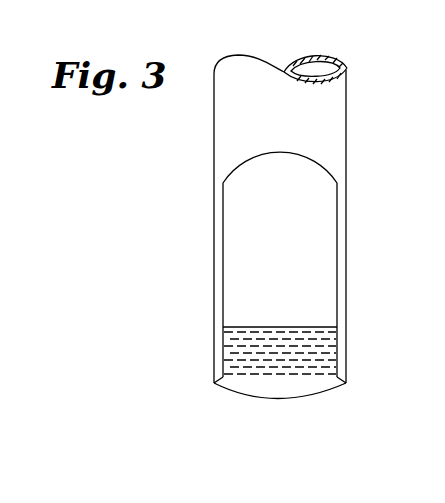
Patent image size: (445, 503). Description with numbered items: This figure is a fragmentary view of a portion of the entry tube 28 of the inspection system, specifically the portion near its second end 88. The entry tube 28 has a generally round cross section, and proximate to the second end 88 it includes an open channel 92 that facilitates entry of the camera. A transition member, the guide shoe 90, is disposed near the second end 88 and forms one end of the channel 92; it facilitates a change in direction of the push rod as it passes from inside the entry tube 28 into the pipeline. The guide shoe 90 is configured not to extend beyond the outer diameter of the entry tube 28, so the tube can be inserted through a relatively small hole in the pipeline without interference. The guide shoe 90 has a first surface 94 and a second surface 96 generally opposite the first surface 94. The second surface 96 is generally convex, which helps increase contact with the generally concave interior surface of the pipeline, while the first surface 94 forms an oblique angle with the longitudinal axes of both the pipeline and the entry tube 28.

The entry tube 28 is at (346, 130).
The second end 88 is at (346, 383).
The guide shoe 90 is at (235, 397).
The open channel 92 is at (337, 246).
The first surface 94 is at (242, 327).
The second surface 96 is at (276, 396).